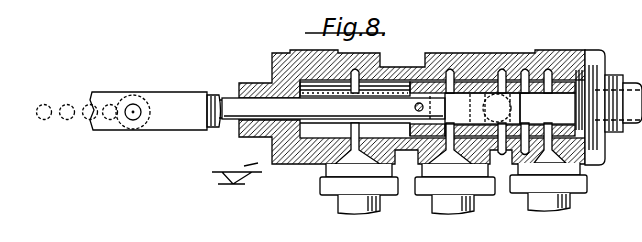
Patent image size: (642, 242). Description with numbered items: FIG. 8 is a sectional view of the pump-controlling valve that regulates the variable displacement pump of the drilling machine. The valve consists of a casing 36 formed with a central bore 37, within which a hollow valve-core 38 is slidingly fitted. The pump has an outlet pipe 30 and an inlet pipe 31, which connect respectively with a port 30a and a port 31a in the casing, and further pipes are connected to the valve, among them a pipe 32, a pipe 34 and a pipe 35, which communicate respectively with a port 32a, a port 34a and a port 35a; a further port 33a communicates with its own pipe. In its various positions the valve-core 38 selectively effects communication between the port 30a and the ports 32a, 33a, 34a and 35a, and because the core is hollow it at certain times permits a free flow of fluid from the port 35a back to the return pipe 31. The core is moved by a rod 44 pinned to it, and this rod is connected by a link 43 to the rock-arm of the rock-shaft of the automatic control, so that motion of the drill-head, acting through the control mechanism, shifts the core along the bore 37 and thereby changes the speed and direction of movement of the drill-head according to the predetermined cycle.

The outlet pipe 30 is at (438, 209).
The inlet port 30a is at (453, 160).
The inlet pipe 31 is at (618, 97).
The port 31a is at (601, 86).
The pipe 32 is at (535, 208).
The port 32a is at (548, 155).
The port 33a is at (530, 60).
The pipe 34 is at (482, 108).
The port 34a is at (504, 70).
The pipe 35 is at (345, 211).
The port 35a is at (361, 160).
The casing 36 is at (402, 67).
The central bore 37 is at (441, 103).
The valve-core 38 is at (547, 108).
The link 43 is at (106, 128).
The rod 44 is at (232, 99).